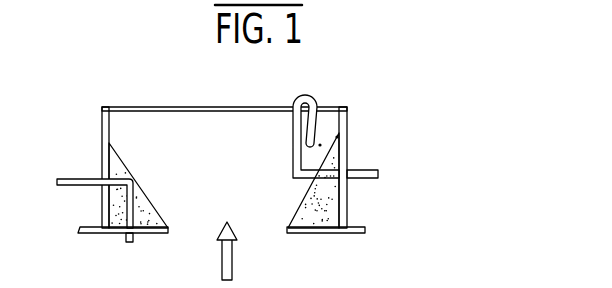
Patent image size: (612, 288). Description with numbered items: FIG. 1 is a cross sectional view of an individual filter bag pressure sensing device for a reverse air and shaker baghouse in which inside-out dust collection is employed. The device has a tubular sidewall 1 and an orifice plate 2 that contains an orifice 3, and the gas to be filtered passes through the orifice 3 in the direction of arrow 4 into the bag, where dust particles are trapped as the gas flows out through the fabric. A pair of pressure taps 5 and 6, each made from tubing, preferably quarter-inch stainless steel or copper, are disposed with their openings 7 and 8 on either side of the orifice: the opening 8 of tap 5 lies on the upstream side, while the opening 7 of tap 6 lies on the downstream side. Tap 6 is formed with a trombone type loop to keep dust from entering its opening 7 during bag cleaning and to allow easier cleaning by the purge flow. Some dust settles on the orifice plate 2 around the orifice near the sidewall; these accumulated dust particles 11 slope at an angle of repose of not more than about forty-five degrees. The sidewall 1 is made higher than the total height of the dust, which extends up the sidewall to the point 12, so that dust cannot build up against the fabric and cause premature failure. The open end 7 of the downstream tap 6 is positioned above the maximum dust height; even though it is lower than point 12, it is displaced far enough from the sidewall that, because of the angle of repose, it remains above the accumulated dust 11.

The tubular sidewall 1 is at (387, 167).
The orifice plate 2 is at (326, 257).
The orifice 3 is at (186, 253).
The arrow 4 is at (252, 255).
The pressure tap 5 is at (80, 211).
The pressure tap 6 is at (326, 118).
The opening 7 is at (350, 125).
The opening 8 is at (123, 257).
The accumulated dust particles 11 is at (357, 180).
The point of maximum dust height 12 is at (378, 136).